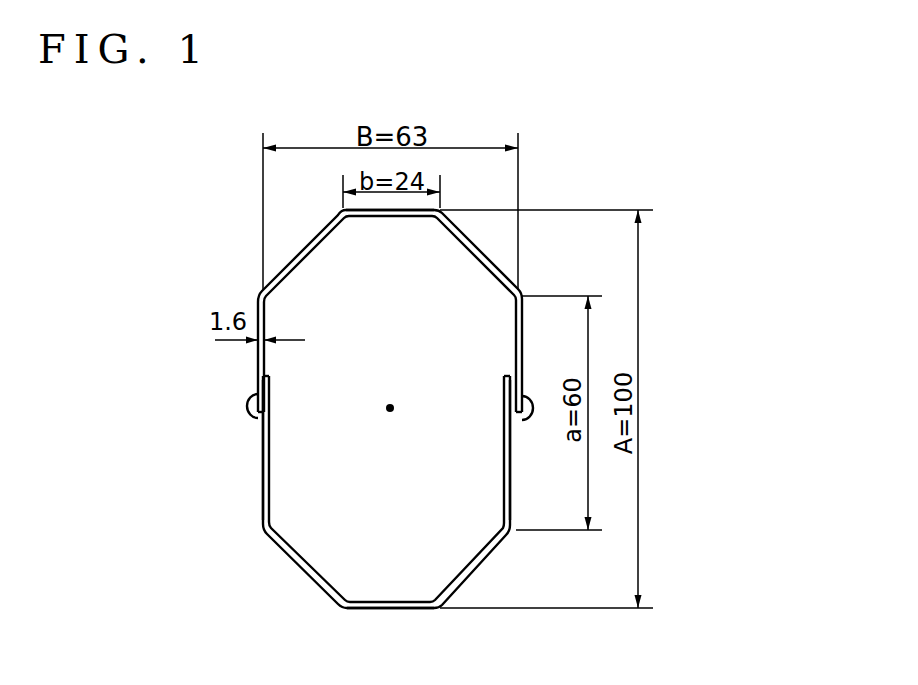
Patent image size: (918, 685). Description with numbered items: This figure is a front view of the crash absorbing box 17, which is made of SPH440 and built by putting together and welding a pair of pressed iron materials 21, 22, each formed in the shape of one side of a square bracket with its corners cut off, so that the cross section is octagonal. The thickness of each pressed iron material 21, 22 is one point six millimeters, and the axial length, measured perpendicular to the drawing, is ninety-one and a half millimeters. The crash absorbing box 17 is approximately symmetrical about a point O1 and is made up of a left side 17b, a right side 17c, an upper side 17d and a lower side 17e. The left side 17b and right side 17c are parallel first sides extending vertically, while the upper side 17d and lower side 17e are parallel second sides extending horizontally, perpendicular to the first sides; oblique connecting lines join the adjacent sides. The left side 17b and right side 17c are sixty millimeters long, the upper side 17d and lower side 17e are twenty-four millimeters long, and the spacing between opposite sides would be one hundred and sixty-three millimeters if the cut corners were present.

The crash absorbing box 17 is at (568, 180).
The left side 17b is at (263, 461).
The right side 17c is at (510, 474).
The upper side 17d is at (393, 217).
The lower side 17e is at (389, 610).
The pressed iron material 21 is at (288, 262).
The pressed iron material 22 is at (480, 568).
The point O1 is at (390, 425).